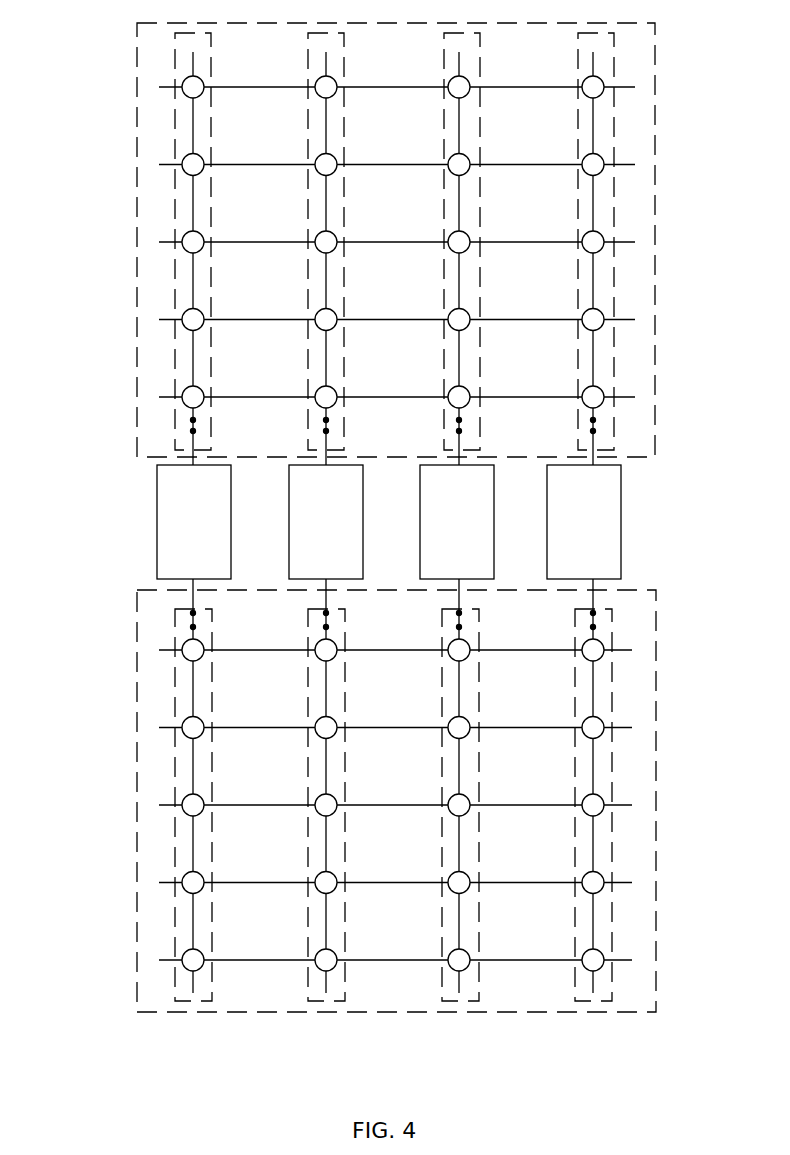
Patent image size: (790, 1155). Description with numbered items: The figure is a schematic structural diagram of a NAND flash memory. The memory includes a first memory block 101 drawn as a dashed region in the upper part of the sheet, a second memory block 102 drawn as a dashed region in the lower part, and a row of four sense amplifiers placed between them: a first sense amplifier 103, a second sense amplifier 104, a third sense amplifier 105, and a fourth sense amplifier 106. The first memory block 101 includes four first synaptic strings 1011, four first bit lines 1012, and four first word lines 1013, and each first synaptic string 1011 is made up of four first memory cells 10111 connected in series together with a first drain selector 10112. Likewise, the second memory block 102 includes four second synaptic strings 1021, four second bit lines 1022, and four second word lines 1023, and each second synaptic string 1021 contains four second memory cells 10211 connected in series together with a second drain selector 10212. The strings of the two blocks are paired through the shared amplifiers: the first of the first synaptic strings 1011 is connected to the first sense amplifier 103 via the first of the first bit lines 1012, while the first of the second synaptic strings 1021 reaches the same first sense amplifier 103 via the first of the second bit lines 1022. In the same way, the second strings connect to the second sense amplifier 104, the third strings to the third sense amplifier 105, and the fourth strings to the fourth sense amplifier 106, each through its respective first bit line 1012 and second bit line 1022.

The first memory block 101 is at (655, 83).
The first synaptic string 1011 is at (175, 63).
The first memory cell 10111 is at (185, 177).
The first drain selector 10112 is at (186, 98).
The first bit line 1012 is at (193, 450).
The first word line 1013 is at (167, 166).
The second memory block 102 is at (655, 658).
The second synaptic string 1021 is at (202, 1001).
The second memory cell 10211 is at (186, 873).
The second drain selector 10212 is at (190, 952).
The second bit line 1022 is at (193, 598).
The second word line 1023 is at (165, 882).
The first sense amplifier 103 is at (231, 524).
The second sense amplifier 104 is at (363, 537).
The third sense amplifier 105 is at (494, 537).
The fourth sense amplifier 106 is at (621, 533).